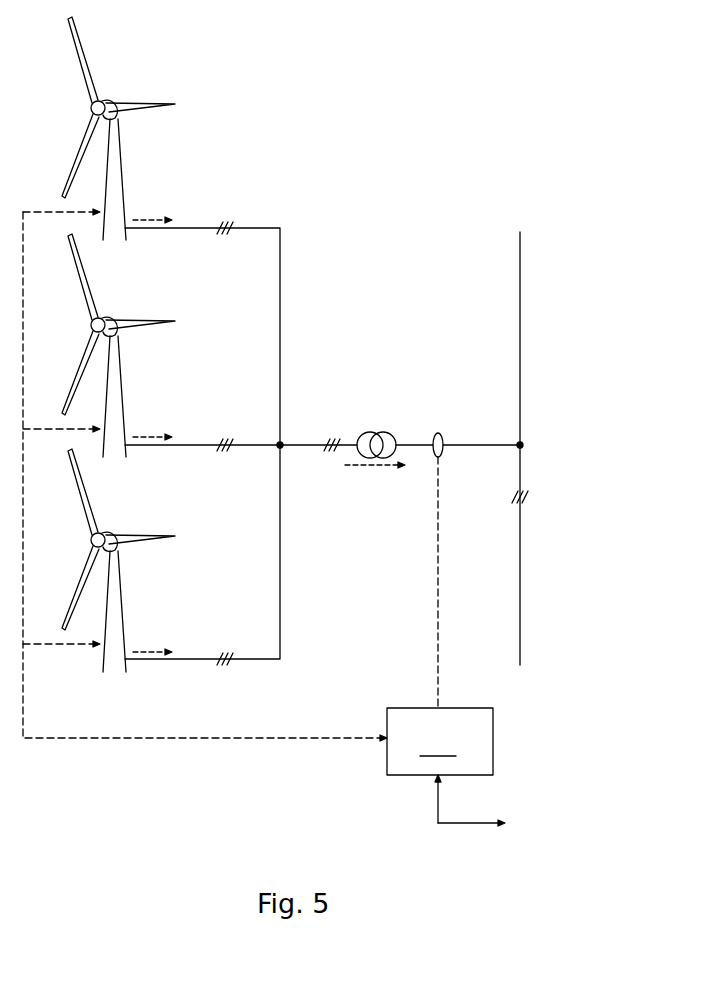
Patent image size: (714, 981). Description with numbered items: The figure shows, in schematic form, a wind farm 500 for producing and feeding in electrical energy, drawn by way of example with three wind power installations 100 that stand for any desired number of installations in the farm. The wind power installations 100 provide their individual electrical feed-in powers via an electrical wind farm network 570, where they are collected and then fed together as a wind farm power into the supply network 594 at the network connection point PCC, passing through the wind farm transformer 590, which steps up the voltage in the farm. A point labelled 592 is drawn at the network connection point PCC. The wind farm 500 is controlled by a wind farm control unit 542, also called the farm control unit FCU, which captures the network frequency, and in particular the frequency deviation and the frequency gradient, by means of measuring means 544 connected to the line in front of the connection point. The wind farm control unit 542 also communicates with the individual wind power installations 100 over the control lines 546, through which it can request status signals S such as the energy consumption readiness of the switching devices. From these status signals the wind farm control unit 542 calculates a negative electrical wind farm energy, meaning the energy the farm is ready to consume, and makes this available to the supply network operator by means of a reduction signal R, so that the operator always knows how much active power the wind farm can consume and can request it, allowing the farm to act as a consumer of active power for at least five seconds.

The wind farm 500 is at (328, 134).
The wind power installation 100 is at (118, 156).
The electrical wind farm network 570 is at (285, 443).
The wind farm transformer 590 is at (381, 420).
The measuring means 544 is at (443, 420).
The point of common coupling (PCC) 592 is at (531, 427).
The supply network 594 is at (522, 254).
The wind farm control unit 542 is at (483, 733).
The control lines 546 is at (133, 740).